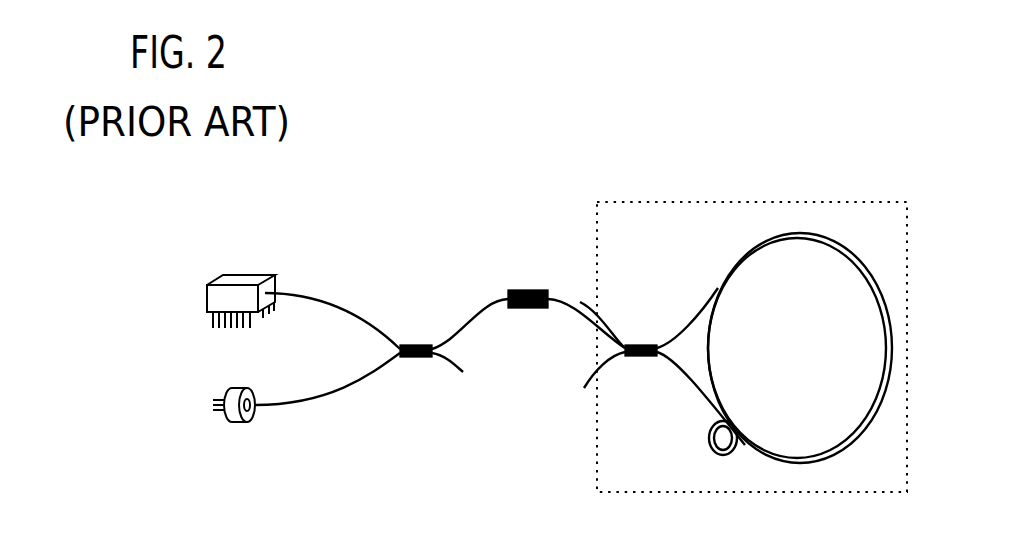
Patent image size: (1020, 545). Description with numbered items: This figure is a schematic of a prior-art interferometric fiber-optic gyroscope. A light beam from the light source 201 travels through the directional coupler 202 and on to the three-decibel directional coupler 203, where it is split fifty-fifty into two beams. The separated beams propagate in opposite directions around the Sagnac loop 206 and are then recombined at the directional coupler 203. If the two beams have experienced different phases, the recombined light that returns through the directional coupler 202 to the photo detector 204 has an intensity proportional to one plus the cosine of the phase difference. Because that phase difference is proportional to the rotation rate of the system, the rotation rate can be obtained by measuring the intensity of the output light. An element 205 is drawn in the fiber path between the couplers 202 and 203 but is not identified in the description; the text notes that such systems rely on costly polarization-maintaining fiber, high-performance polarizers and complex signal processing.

The light source 201 is at (251, 272).
The directional coupler 202 is at (413, 345).
The 3-dB directional coupler 203 is at (639, 345).
The photo detector 204 is at (238, 425).
The polarizer 205 is at (528, 290).
The Sagnac loop 206 is at (700, 201).